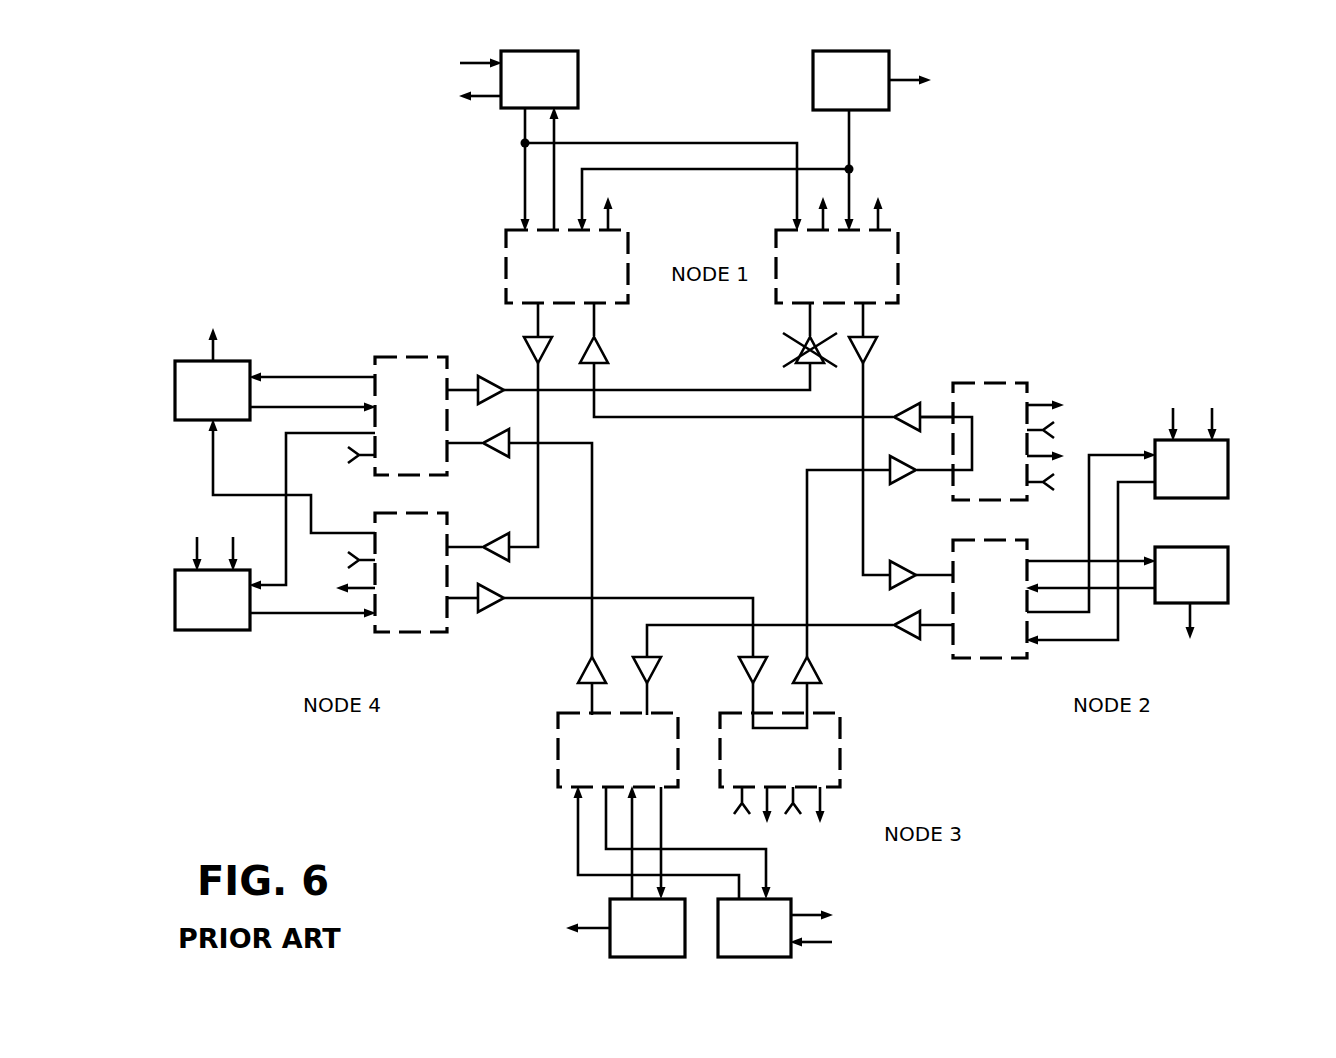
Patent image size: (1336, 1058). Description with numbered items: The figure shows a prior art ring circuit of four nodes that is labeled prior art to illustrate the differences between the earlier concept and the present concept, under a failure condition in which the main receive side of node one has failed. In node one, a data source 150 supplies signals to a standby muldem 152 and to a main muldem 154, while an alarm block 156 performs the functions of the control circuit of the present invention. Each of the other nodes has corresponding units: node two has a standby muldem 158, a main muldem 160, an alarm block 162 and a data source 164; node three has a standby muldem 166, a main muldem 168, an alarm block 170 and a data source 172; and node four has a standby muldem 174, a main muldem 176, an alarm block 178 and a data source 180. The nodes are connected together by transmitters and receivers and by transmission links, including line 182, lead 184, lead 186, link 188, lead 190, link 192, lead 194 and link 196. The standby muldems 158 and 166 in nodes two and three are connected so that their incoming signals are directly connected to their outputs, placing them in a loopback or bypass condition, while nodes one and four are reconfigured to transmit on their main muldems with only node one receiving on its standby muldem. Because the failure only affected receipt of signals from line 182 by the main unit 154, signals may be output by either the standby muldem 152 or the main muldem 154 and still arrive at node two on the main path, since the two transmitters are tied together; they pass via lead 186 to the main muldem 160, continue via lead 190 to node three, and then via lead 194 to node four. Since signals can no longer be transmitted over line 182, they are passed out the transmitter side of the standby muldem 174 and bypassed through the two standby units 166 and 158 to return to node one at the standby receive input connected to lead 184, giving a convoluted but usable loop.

The data source 150 is at (578, 80).
The standby muldem 152 is at (506, 252).
The main muldem 154 is at (898, 252).
The alarm block 156 is at (813, 80).
The standby muldem 158 is at (998, 383).
The main muldem 160 is at (972, 658).
The alarm block 162 is at (1228, 575).
The data source 164 is at (1228, 470).
The standby muldem 166 is at (840, 763).
The main muldem 168 is at (558, 763).
The alarm block 170 is at (610, 906).
The data source 172 is at (791, 905).
The standby muldem 174 is at (430, 632).
The main muldem 176 is at (397, 357).
The alarm block 178 is at (237, 361).
The data source 180 is at (215, 630).
The line 182 is at (691, 390).
The lead 184 is at (702, 418).
The lead 186 is at (864, 388).
The transmission link 188 is at (806, 513).
The lead 190 is at (869, 626).
The transmission link 192 is at (700, 598).
The lead 194 is at (593, 508).
The transmission link 196 is at (538, 492).